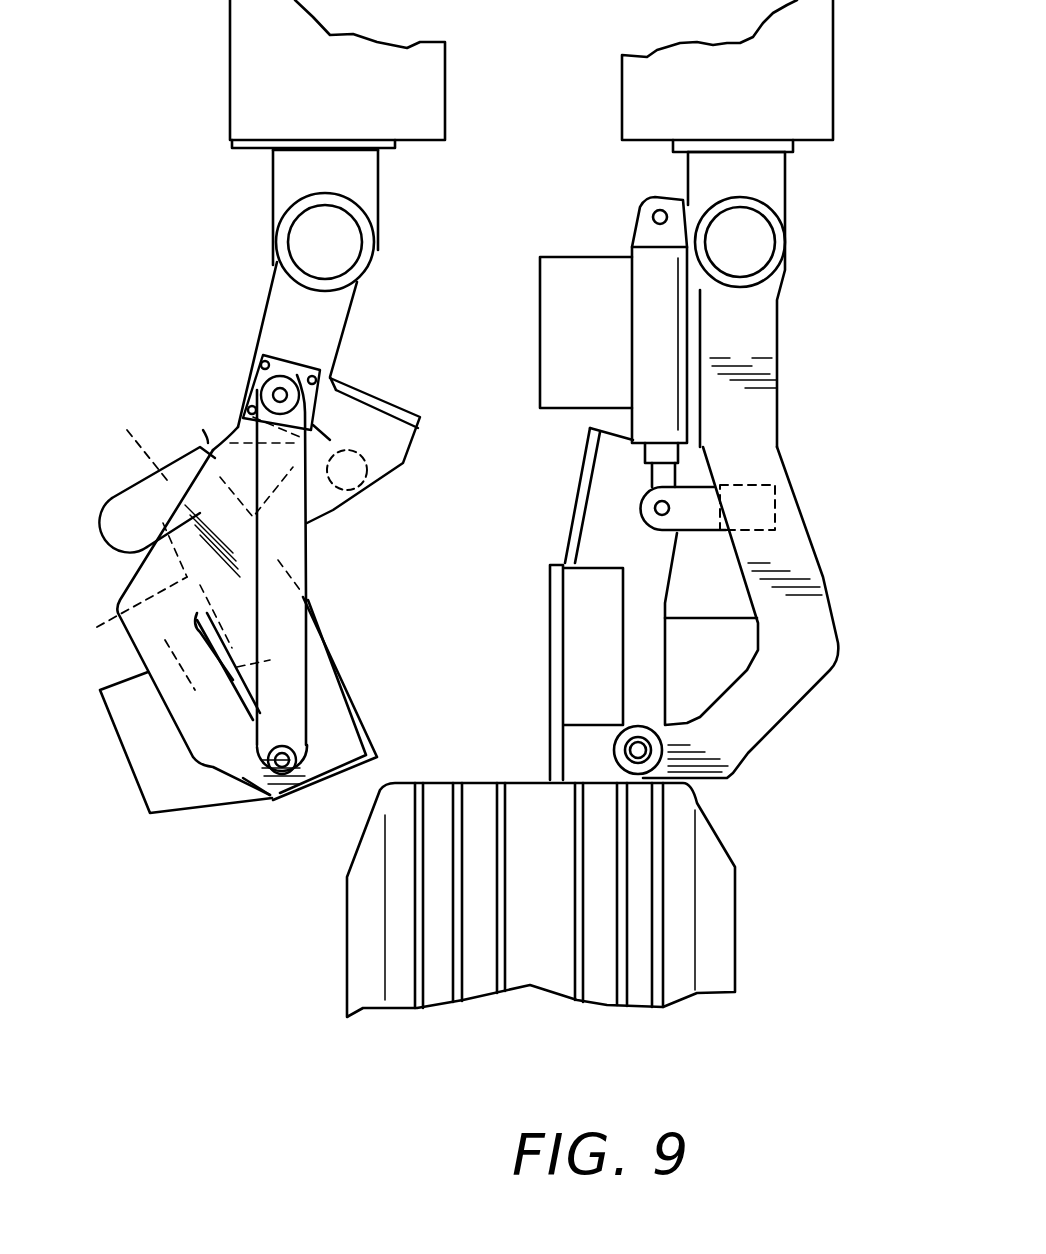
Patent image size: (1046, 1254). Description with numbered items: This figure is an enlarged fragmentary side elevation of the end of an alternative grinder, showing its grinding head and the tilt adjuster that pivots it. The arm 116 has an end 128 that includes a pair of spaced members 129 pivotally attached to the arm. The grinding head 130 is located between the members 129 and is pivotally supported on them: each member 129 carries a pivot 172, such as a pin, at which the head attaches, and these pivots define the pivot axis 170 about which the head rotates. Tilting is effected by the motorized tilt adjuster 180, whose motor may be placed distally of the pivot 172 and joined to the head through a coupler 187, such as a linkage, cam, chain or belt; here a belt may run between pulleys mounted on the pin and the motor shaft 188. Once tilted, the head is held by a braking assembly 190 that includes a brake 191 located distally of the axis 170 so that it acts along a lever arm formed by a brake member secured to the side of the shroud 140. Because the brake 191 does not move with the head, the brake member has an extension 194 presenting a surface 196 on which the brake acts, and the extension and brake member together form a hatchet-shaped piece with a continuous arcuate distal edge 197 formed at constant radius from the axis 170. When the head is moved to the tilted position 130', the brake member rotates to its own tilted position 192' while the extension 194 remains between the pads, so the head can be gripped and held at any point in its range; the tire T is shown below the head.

The arm 116 is at (245, 73).
The end 128 is at (290, 176).
The spaced member 129 is at (278, 325).
The grinding head 130 is at (627, 488).
The tilted position 130' is at (274, 608).
The shroud 140 is at (138, 745).
The pivot axis 170 is at (285, 758).
The pivot 172 is at (267, 782).
The motorized tilt adjuster 180 is at (268, 393).
The coupler 187 is at (290, 544).
The motor shaft 188 is at (280, 395).
The braking assembly 190 is at (380, 422).
The brake 191 is at (121, 633).
The tilted position of brake member 192' is at (392, 486).
The extension 194 is at (122, 518).
The surface 196 is at (125, 440).
The arcuate distal edge 197 is at (203, 430).
The tire T is at (360, 917).